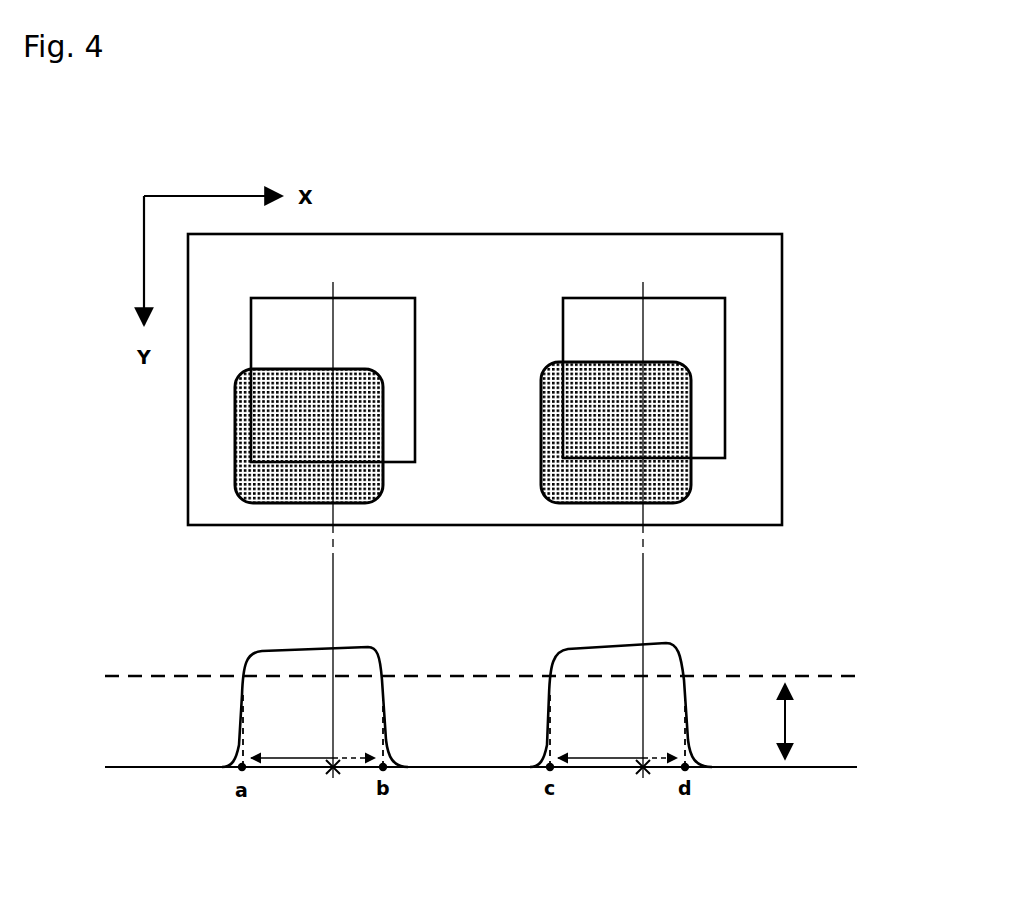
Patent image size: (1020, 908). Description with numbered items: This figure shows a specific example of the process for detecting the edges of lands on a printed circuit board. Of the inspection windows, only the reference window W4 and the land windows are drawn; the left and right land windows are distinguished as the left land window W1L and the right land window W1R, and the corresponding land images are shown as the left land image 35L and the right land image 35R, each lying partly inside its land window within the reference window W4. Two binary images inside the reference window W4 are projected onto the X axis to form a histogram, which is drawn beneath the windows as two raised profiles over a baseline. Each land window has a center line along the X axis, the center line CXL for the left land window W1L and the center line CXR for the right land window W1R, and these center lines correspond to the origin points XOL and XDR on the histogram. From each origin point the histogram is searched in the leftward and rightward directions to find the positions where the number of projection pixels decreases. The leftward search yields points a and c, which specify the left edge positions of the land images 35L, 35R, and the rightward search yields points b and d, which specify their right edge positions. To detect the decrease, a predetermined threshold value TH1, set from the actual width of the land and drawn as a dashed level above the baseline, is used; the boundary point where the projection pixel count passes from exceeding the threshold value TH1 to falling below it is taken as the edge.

The reference window W4 is at (782, 338).
The left land window W1L is at (393, 298).
The right land window W1R is at (693, 298).
The left land image 35L is at (268, 493).
The right land image 35R is at (675, 490).
The center line of left land window CXL is at (331, 518).
The center line of right land window CXR is at (642, 518).
The threshold value TH1 is at (813, 721).
The origin point for left land window XOL is at (333, 795).
The origin point for right land window XDR is at (643, 795).